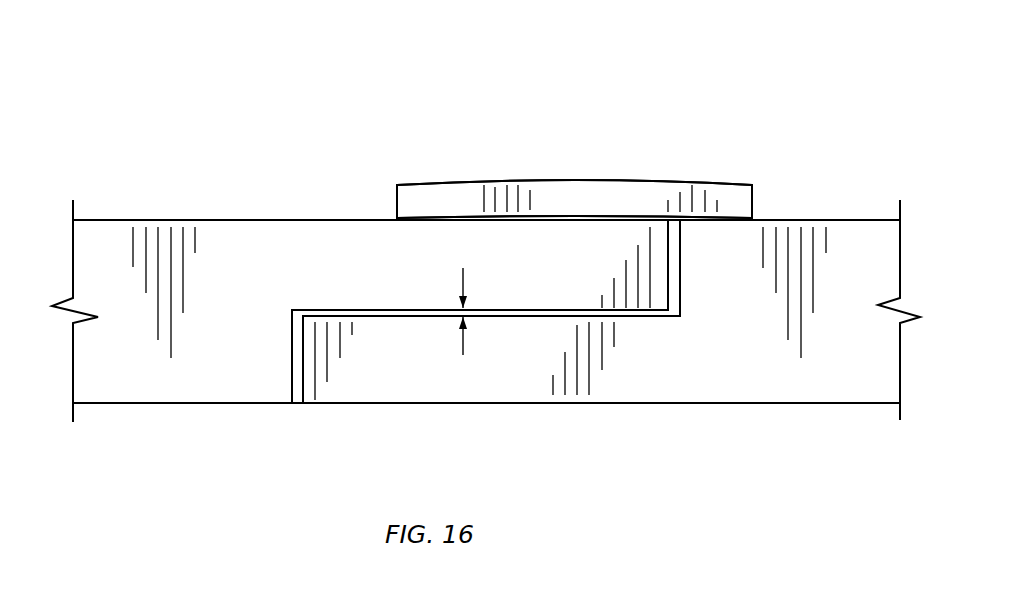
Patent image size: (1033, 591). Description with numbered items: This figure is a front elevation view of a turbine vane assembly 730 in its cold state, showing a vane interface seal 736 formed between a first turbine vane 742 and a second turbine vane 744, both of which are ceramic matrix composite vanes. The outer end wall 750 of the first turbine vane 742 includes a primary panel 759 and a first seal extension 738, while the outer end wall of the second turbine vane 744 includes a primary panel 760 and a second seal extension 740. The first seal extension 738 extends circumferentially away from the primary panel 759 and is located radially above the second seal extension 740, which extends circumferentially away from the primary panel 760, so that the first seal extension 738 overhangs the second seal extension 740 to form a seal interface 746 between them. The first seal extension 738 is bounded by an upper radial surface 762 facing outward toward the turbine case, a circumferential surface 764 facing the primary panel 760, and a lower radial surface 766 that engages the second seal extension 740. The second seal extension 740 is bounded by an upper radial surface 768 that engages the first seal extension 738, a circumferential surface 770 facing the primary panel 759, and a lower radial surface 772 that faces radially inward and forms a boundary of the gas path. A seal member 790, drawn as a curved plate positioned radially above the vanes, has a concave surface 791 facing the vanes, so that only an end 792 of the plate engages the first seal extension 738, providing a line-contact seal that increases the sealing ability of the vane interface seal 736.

The turbine vane assembly 730 is at (666, 124).
The vane interface seal 736 is at (418, 73).
The first seal extension 738 is at (313, 238).
The second seal extension 740 is at (465, 390).
The first turbine vane 742 is at (205, 102).
The second turbine vane 744 is at (733, 445).
The seal interface 746 is at (405, 312).
The outer end wall 750 is at (165, 137).
The primary panel 759 is at (202, 230).
The primary panel 760 is at (772, 388).
The upper radial surface 762 is at (477, 218).
The circumferential surface 764 is at (670, 258).
The lower radial surface 766 is at (465, 277).
The upper radial surface 768 is at (533, 302).
The circumferential surface 770 is at (303, 355).
The lower radial surface 772 is at (368, 404).
The seal member 790 is at (731, 201).
The concave surface 791 is at (568, 218).
The end 792 is at (412, 218).